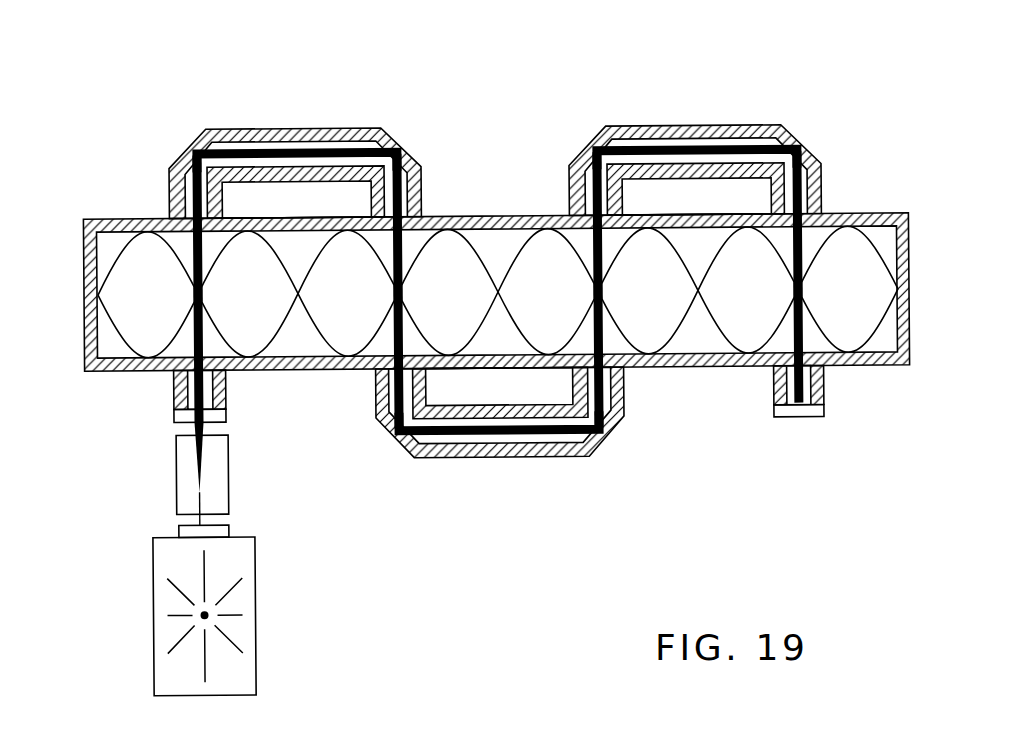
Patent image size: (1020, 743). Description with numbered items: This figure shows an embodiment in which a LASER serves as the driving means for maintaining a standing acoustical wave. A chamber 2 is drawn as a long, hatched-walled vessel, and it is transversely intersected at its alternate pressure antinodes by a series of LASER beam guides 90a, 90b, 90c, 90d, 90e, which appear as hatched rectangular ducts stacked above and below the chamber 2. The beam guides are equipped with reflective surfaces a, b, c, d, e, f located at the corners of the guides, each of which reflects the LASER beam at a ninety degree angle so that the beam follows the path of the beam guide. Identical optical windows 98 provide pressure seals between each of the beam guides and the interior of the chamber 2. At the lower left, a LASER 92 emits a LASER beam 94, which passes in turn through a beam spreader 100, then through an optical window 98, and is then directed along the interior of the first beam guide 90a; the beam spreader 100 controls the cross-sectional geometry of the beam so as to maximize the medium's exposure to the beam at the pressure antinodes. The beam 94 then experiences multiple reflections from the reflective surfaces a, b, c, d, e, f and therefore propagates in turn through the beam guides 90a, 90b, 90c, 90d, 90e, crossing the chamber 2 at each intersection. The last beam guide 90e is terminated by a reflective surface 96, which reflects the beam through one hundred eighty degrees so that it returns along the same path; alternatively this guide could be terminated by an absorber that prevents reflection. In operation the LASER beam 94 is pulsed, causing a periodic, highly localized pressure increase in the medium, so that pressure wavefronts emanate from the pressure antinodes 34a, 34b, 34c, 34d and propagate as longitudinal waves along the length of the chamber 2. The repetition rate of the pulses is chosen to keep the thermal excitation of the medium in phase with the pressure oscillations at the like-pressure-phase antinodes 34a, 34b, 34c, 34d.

The chamber 2 is at (140, 218).
The pressure antinode 34a is at (790, 290).
The pressure antinode 34b is at (592, 292).
The pressure antinode 34c is at (393, 293).
The pressure antinode 34d is at (192, 297).
The LASER beam guide 90a is at (173, 385).
The LASER beam guide 90b is at (308, 127).
The LASER beam guide 90c is at (440, 457).
The LASER beam guide 90d is at (723, 125).
The LASER beam guide 90e is at (823, 383).
The LASER 92 is at (243, 637).
The LASER beam 94 is at (193, 250).
The reflective surface 96 is at (810, 412).
The optical window 98 is at (207, 365).
The beam spreader 100 is at (183, 493).
The reflective surface a is at (198, 138).
The reflective surface b is at (400, 138).
The reflective surface c is at (400, 438).
The reflective surface d is at (598, 437).
The reflective surface e is at (602, 135).
The reflective surface f is at (795, 137).